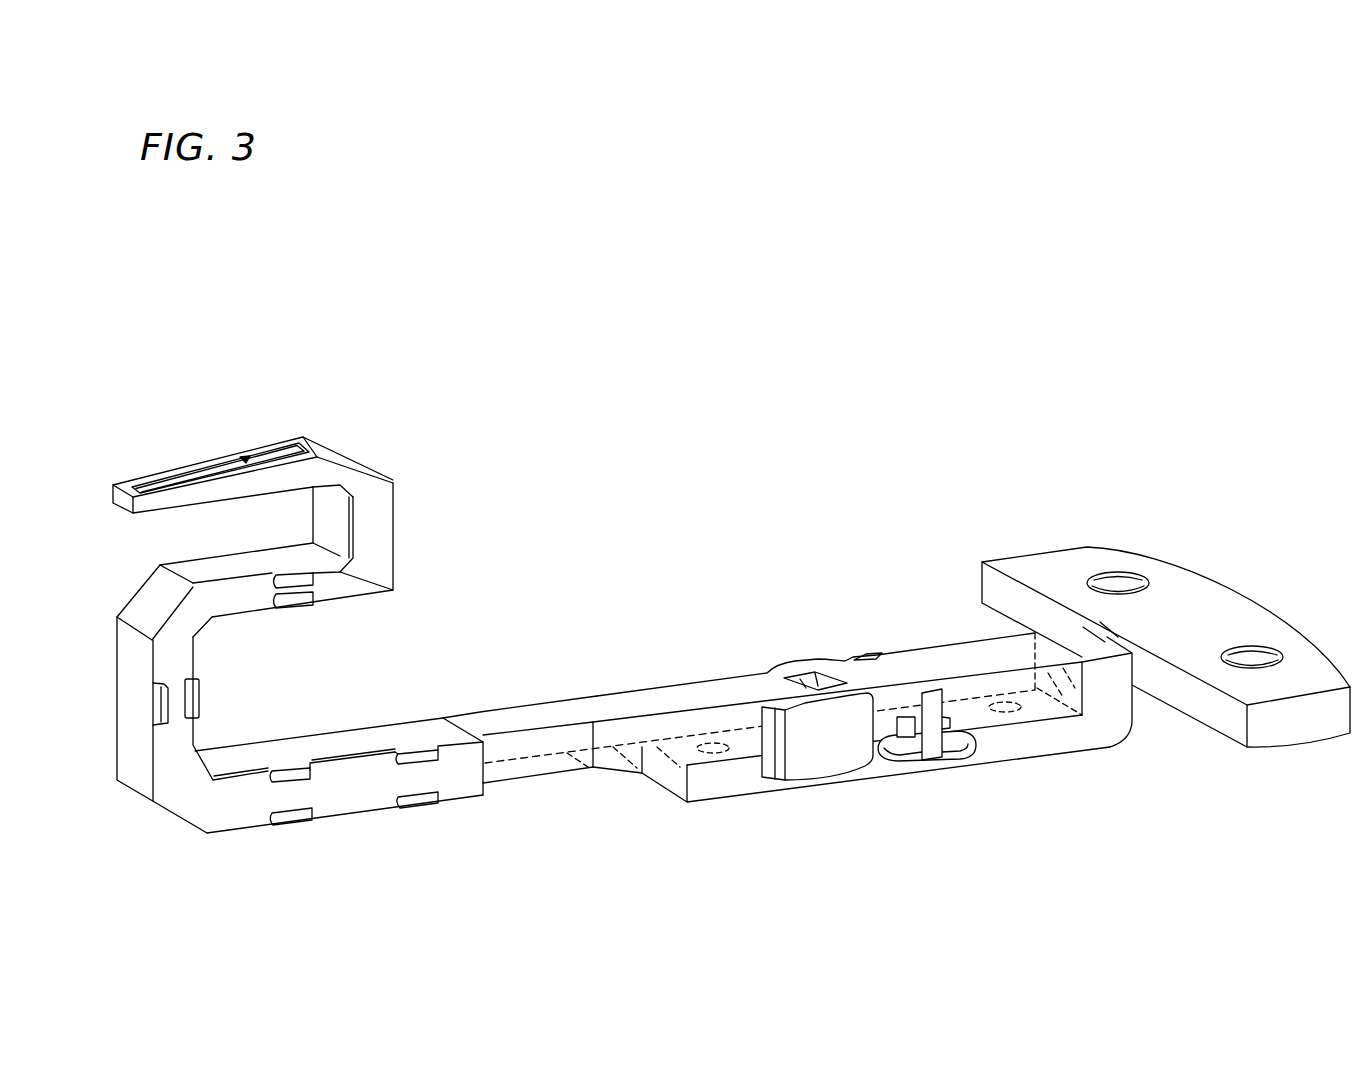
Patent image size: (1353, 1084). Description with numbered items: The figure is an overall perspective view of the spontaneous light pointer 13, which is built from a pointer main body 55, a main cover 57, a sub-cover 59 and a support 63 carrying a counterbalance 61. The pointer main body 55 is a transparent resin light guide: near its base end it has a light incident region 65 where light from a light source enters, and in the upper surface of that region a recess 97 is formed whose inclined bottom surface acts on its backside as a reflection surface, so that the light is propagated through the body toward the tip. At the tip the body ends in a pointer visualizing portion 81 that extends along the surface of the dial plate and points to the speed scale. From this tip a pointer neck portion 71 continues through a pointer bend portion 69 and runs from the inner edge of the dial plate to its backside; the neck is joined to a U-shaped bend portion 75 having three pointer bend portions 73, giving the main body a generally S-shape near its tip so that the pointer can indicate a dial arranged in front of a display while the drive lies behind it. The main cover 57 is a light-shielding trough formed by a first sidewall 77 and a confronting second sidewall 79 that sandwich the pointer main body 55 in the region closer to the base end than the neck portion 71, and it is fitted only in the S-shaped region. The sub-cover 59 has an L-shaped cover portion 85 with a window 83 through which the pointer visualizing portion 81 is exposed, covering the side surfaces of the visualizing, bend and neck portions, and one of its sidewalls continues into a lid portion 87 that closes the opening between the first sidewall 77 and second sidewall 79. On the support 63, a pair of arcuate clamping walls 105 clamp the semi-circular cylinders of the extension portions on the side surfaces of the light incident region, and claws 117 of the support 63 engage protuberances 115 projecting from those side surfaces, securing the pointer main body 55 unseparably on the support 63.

The spontaneous light pointer 13 is at (494, 348).
The pointer main body 55 is at (554, 766).
The main cover 57 is at (265, 596).
The sub-cover 59 is at (297, 474).
The counterbalance 61 is at (1220, 592).
The support 63 is at (862, 715).
The light incident region 65 is at (833, 619).
The pointer bend portion 69 is at (320, 502).
The pointer neck portion 71 is at (377, 527).
The pointer bend portions 73 is at (405, 611).
The U-shaped bend portion 75 is at (130, 713).
The first sidewall 77 is at (130, 658).
The second sidewall 79 is at (425, 732).
The pointer visualizing portion 81 is at (220, 426).
The window 83 is at (243, 460).
The L-shaped cover portion 85 is at (347, 457).
The lid portion 87 is at (339, 756).
The recess 97 is at (823, 675).
The arcuate clamping walls 105 is at (825, 742).
The protuberances 115 is at (908, 724).
The claws 117 is at (935, 690).